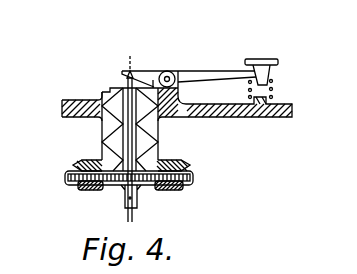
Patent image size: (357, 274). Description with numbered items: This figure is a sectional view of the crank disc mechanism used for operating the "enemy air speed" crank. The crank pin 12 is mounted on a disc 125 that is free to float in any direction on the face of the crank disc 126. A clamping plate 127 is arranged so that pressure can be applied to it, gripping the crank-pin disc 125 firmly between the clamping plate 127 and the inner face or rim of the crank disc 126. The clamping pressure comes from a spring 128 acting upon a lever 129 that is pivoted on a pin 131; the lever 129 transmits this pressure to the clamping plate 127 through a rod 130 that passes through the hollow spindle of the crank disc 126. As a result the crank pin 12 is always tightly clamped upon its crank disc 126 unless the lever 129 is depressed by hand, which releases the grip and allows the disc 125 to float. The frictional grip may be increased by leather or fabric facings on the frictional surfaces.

The crank pin 12 is at (138, 204).
The disc 125 is at (114, 190).
The crank disc 126 is at (66, 182).
The clamping plate 127 is at (190, 175).
The spring 128 is at (276, 93).
The lever 129 is at (200, 70).
The rod 130 is at (127, 139).
The pin 131 is at (163, 72).